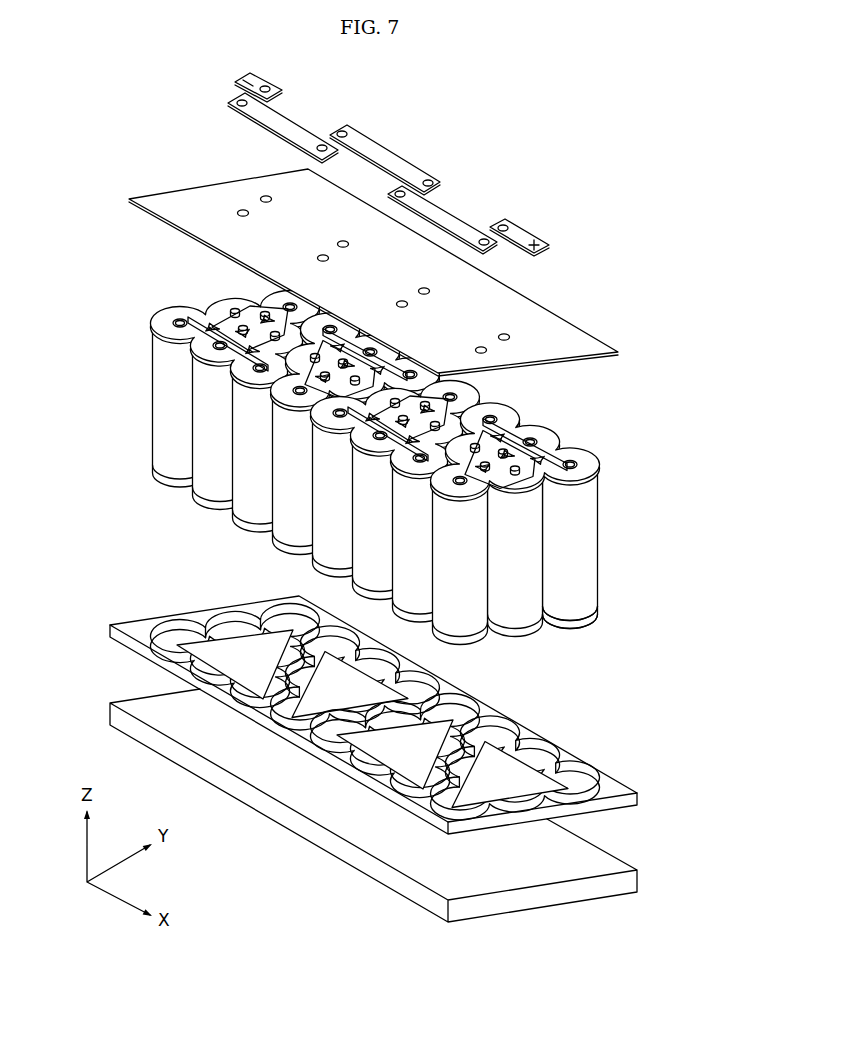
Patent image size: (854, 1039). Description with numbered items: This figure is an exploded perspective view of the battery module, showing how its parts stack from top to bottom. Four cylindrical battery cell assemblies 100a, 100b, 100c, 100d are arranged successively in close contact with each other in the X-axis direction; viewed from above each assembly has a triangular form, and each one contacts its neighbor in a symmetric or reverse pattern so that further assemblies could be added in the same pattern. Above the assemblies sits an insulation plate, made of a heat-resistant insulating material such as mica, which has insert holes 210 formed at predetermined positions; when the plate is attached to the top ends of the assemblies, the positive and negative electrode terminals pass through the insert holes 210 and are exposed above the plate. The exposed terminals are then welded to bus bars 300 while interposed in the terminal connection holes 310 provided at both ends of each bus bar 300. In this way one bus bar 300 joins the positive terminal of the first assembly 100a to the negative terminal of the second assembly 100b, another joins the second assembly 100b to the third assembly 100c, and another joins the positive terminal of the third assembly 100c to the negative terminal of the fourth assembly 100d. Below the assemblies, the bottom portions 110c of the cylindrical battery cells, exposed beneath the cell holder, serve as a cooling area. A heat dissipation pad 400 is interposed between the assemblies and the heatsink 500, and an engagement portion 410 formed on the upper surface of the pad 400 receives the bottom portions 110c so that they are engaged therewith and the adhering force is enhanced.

The first cylindrical battery cell assembly 100a is at (137, 389).
The second cylindrical battery cell assembly 100b is at (270, 487).
The third cylindrical battery cell assembly 100c is at (486, 390).
The fourth cylindrical battery cell assembly 100d is at (609, 518).
The bottom portion 110c is at (581, 622).
The insert hole 210 is at (264, 196).
The bus bar 300 is at (391, 157).
The terminal connection hole 310 is at (344, 132).
The heat dissipation pad 400 is at (546, 720).
The engagement portion 410 is at (578, 782).
The heatsink 500 is at (276, 843).